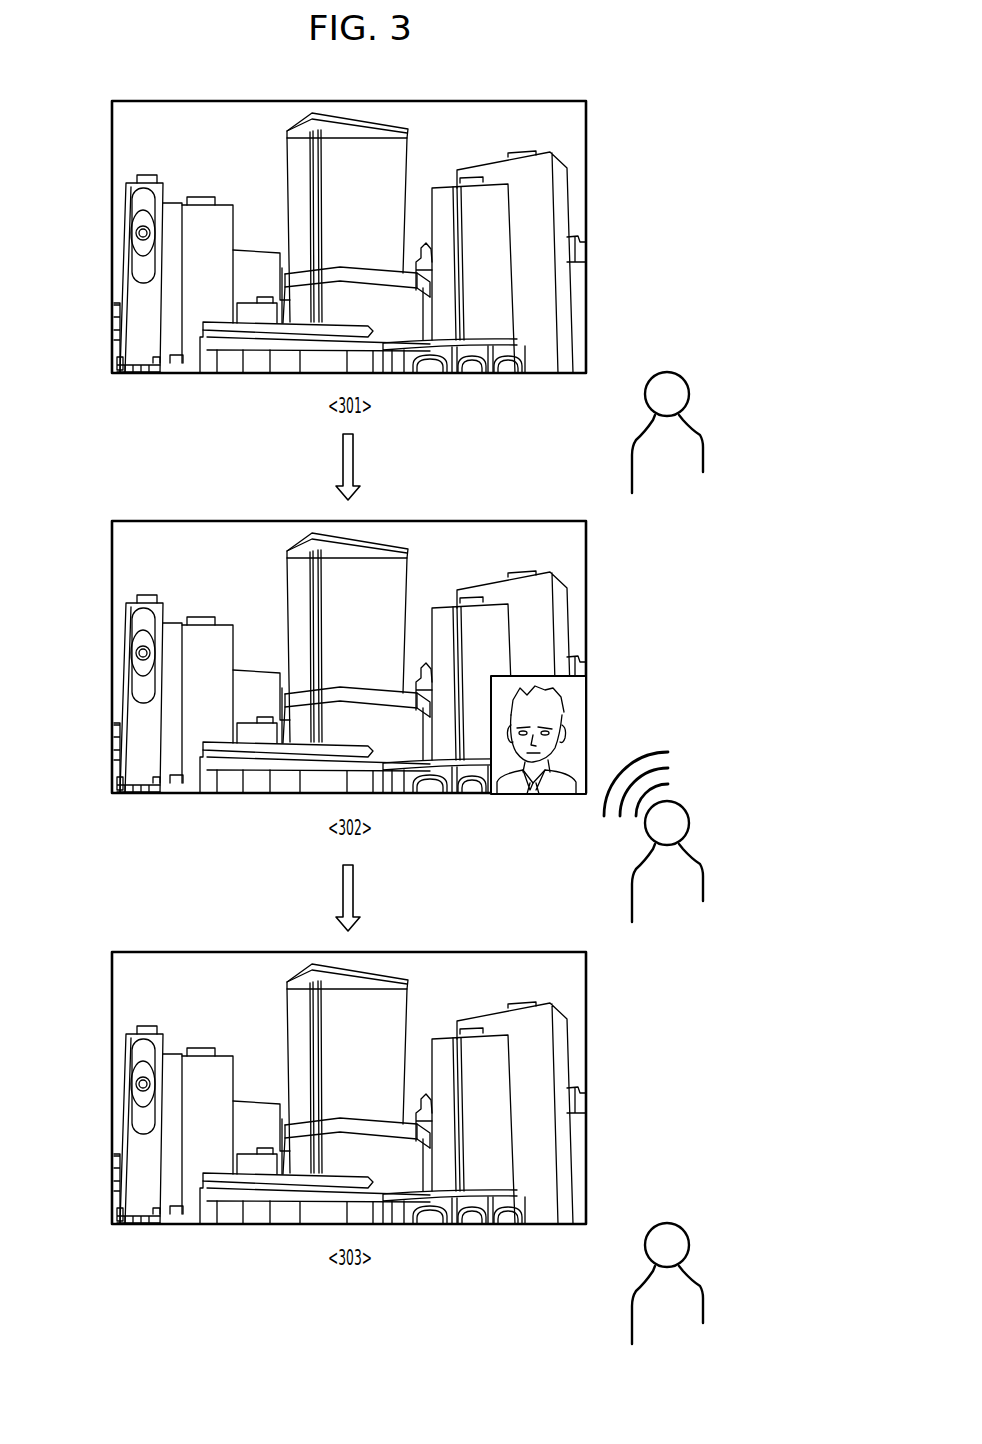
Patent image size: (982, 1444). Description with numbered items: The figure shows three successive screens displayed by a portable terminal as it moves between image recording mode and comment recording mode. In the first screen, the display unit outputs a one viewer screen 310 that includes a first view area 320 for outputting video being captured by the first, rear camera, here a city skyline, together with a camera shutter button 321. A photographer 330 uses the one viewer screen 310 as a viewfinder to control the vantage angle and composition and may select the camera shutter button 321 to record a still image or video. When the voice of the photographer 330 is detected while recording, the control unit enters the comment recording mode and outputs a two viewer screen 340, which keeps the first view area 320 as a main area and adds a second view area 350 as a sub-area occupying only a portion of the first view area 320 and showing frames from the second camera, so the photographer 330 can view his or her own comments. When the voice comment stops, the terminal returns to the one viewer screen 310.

The one viewer screen 310 is at (351, 633).
The first view area 320 is at (562, 185).
The camera shutter button 321 is at (135, 233).
The photographer 330 is at (670, 377).
The two viewer screen 340 is at (351, 629).
The second view area 350 is at (565, 698).